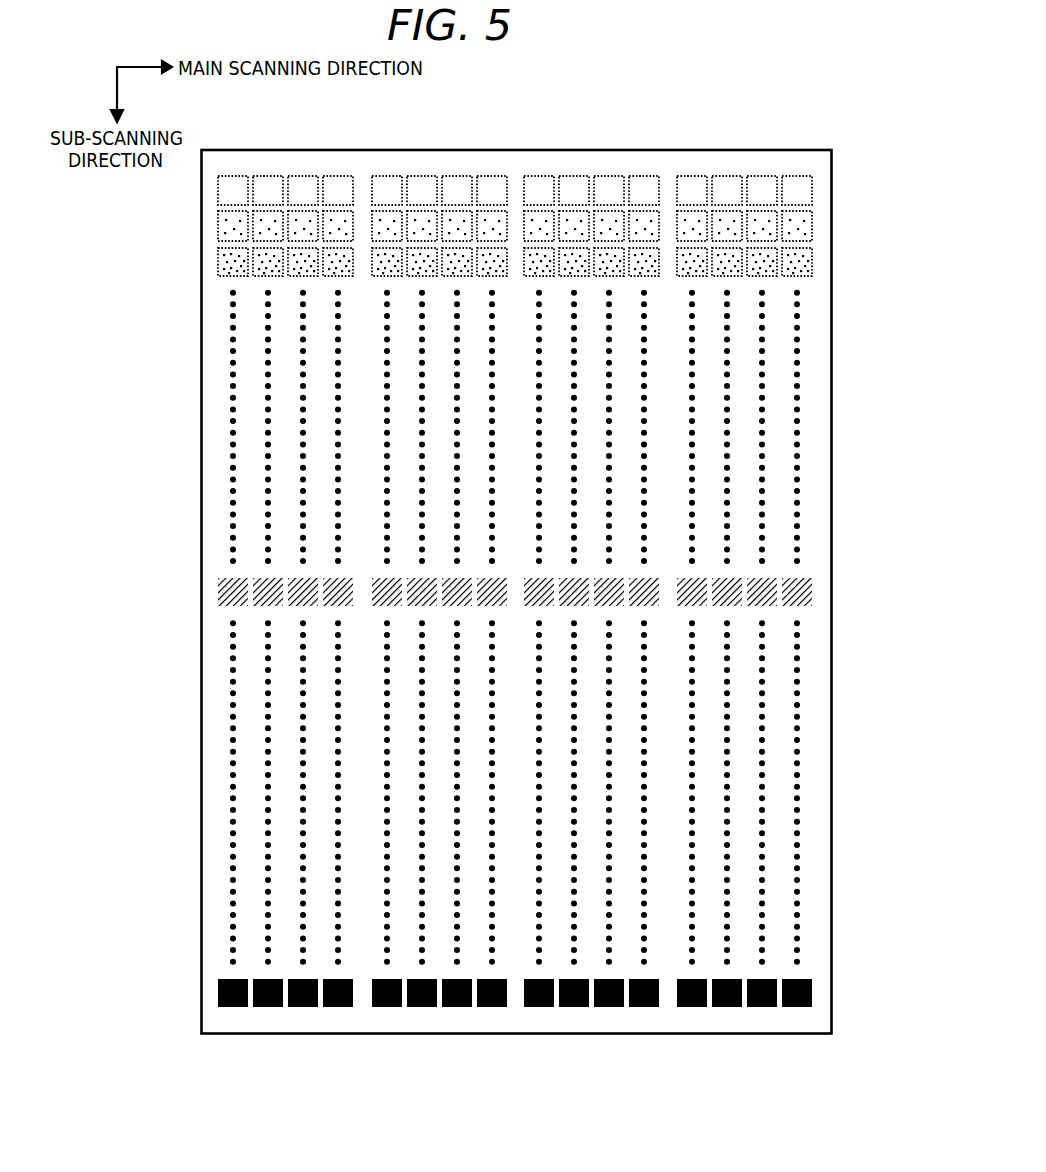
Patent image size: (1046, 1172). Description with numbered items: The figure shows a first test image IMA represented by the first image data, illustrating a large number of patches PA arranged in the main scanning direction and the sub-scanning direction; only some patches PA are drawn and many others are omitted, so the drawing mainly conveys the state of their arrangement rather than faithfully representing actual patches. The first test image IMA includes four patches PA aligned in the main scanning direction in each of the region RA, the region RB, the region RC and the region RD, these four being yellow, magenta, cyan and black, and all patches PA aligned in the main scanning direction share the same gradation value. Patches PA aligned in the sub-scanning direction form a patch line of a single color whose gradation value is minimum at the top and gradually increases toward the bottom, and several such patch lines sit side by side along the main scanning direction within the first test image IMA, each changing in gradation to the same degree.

The patch PA is at (218, 192).
The first test image IMA is at (620, 150).
The region RA is at (286, 697).
The region RB is at (438, 697).
The region RC is at (591, 697).
The region RD is at (743, 697).